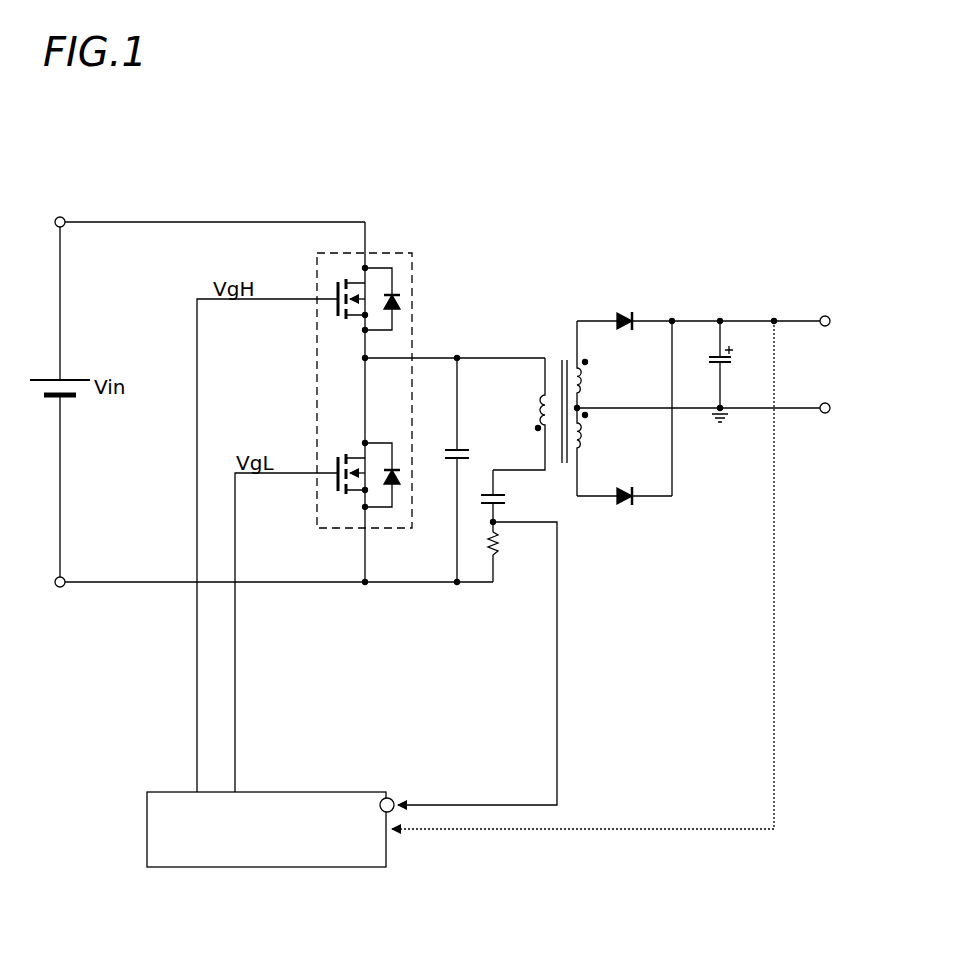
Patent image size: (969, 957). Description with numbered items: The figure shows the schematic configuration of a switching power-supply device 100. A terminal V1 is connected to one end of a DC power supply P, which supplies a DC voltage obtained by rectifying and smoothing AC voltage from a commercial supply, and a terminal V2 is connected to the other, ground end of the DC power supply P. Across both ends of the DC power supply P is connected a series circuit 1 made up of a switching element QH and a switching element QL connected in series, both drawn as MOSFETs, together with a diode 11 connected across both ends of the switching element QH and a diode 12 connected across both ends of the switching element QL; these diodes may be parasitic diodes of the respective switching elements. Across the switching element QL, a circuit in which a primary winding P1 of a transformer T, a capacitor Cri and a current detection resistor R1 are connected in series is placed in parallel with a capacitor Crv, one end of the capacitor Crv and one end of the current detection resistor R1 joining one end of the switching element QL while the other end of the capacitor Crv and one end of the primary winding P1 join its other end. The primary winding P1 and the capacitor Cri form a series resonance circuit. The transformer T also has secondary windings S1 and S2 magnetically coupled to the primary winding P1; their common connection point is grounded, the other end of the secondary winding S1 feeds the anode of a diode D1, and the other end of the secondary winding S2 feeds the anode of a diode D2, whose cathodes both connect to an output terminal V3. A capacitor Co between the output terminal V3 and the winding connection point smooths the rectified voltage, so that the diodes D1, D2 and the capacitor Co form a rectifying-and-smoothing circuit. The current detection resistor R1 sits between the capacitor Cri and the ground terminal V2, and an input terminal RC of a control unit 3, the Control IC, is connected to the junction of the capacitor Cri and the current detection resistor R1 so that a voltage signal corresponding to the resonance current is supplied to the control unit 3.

The series circuit 1 is at (403, 250).
The control unit 3 is at (265, 791).
The diode 11 is at (400, 300).
The diode 12 is at (399, 471).
The switching power-supply device 100 is at (500, 243).
The switching element QH is at (334, 282).
The switching element QL is at (332, 456).
The capacitor Crv is at (447, 458).
The capacitor Cri is at (502, 497).
The current detection resistor R1 is at (500, 547).
The transformer T is at (563, 349).
The primary winding P1 is at (539, 404).
The secondary winding S1 is at (591, 378).
The secondary winding S2 is at (591, 433).
The diode D1 is at (625, 315).
The diode D2 is at (622, 504).
The capacitor Co is at (724, 368).
The input terminal RC is at (387, 797).
The terminal V1 is at (58, 217).
The terminal V2 is at (53, 579).
The output terminal V3 is at (825, 316).
The DC power supply P is at (78, 380).